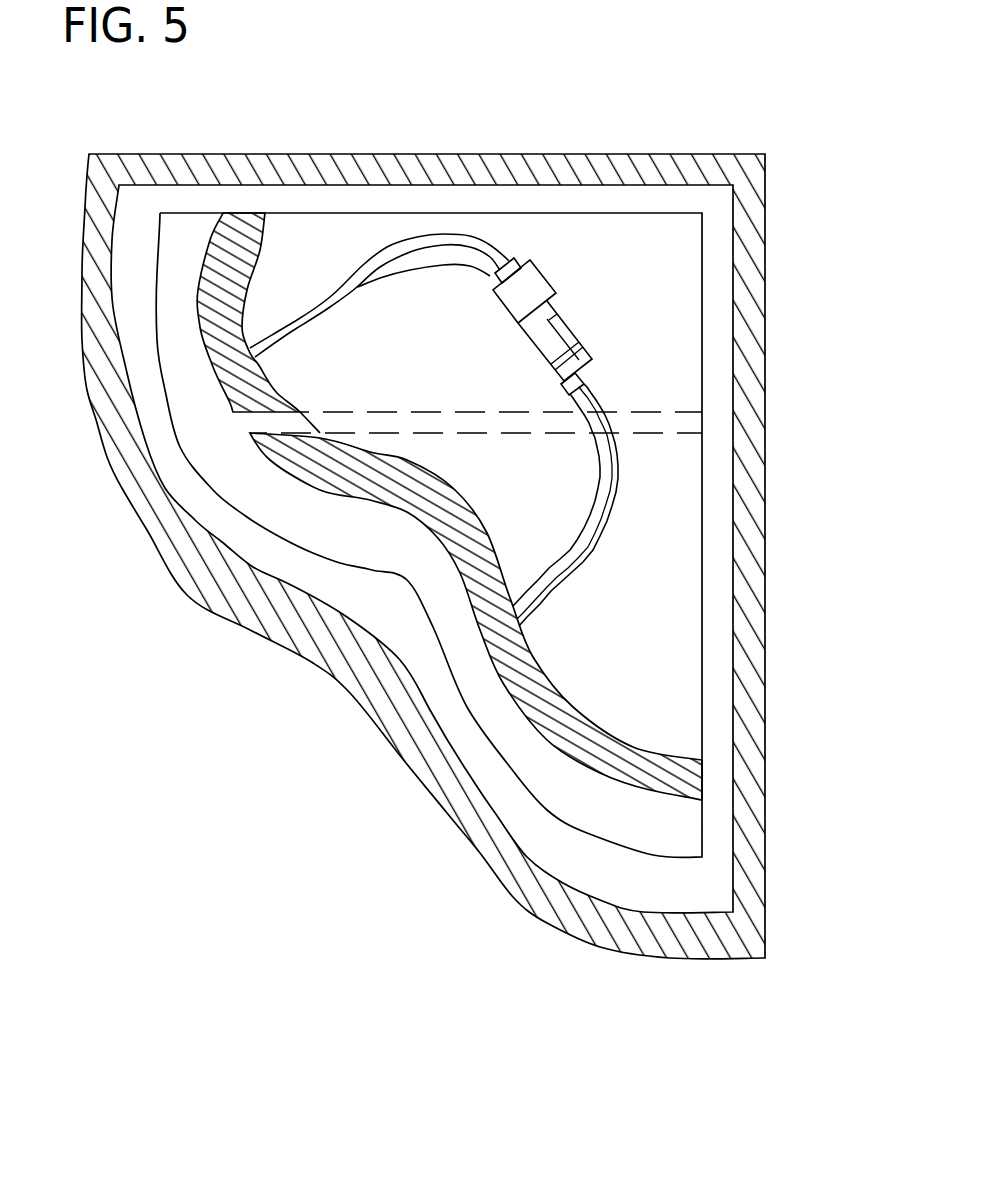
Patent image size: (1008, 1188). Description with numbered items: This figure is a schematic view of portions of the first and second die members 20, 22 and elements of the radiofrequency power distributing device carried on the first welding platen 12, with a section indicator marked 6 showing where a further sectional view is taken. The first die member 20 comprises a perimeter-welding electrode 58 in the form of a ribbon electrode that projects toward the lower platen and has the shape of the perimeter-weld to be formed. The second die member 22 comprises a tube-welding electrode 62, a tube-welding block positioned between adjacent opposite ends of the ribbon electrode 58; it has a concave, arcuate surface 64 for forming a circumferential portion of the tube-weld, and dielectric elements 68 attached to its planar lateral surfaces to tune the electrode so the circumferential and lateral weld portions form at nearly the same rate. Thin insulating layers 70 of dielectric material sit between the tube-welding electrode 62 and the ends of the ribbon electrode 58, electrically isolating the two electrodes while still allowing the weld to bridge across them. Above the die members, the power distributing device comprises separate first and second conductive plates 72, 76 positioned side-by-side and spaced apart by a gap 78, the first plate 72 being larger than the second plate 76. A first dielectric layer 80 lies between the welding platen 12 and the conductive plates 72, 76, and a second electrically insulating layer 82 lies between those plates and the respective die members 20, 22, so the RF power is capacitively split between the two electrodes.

The section line 6- 6 is at (547, 340).
The first welding platen 12 is at (812, 857).
The first die member 20 is at (572, 585).
The second die member 22 is at (613, 357).
The perimeter-welding electrode 58 is at (617, 483).
The tube-welding electrode 62 is at (560, 370).
The concave, arcuate surface 64 is at (552, 315).
The dielectric elements 68 is at (528, 300).
The insulating layers 70 is at (516, 263).
The first conductive plate 72 is at (687, 786).
The second conductive plate 76 is at (243, 223).
The gap 78 is at (222, 447).
The first dielectric layer 80 is at (682, 829).
The second electrically insulating layer 82 is at (677, 573).